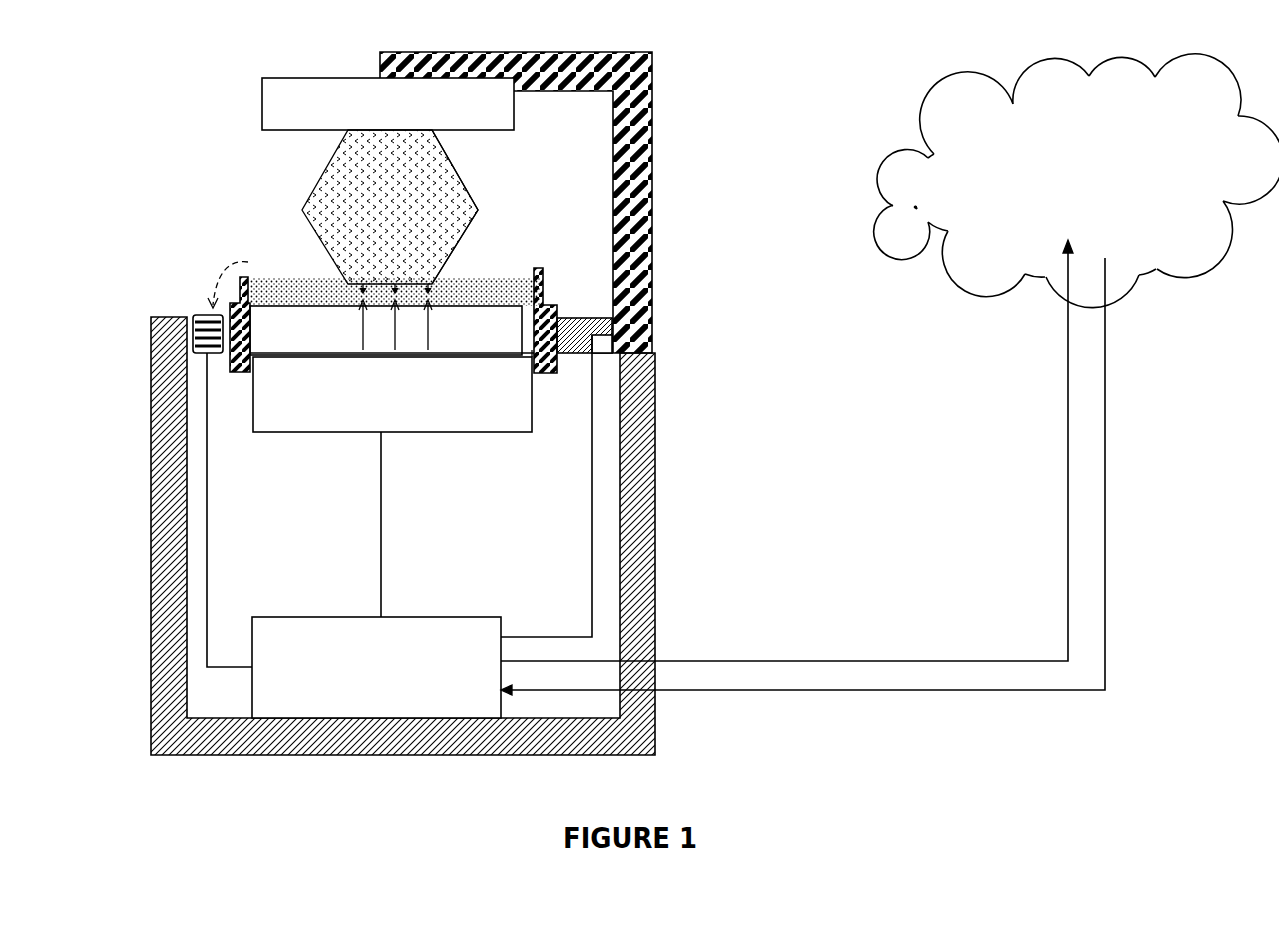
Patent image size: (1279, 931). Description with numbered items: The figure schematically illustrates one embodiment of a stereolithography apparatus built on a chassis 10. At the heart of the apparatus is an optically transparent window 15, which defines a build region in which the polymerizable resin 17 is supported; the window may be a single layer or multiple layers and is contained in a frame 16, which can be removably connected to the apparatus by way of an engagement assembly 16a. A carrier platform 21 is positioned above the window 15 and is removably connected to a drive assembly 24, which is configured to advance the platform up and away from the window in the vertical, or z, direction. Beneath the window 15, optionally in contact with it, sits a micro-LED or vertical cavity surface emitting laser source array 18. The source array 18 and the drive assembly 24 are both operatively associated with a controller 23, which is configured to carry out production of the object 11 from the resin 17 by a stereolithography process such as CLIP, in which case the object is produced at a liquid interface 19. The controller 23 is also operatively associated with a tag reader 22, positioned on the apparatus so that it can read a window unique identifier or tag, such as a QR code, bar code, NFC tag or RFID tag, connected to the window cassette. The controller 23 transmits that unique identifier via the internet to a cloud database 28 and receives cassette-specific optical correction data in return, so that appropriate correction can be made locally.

The chassis 10 is at (655, 560).
The object 11 is at (390, 211).
The optically transparent window 15 is at (392, 327).
The frame 16 is at (540, 330).
The engagement assembly 16a is at (556, 372).
The resin 17 is at (488, 290).
The source array 18 is at (392, 391).
The liquid interface 19 is at (457, 243).
The carrier platform 21 is at (283, 335).
The tag reader 22 is at (193, 318).
The controller 23 is at (422, 526).
The drive assembly 24 is at (657, 195).
The cloud database 28 is at (890, 374).